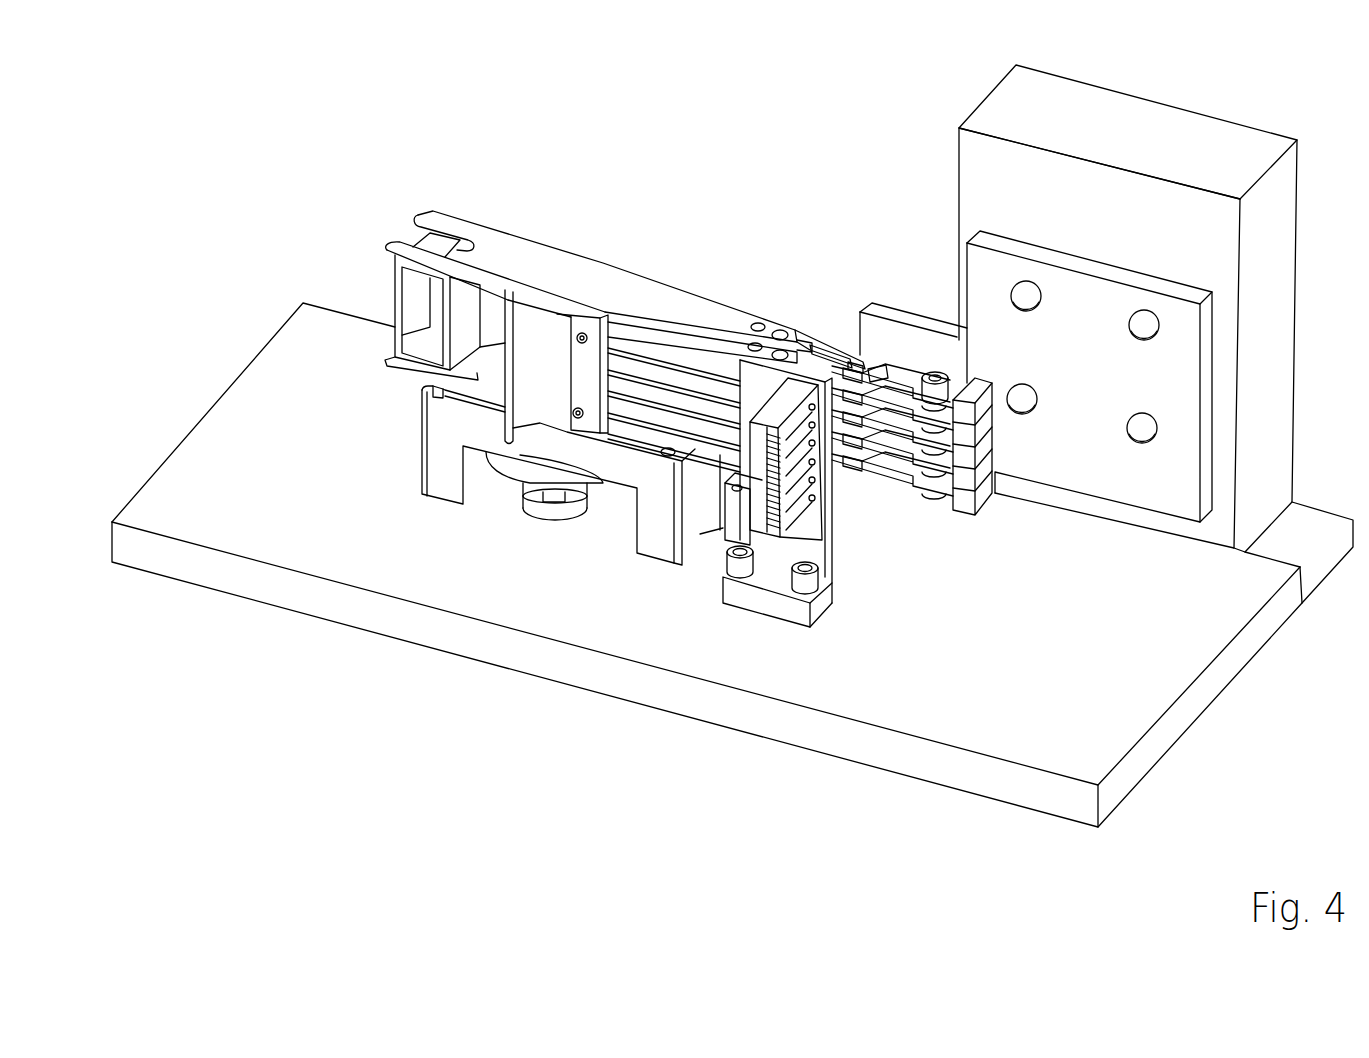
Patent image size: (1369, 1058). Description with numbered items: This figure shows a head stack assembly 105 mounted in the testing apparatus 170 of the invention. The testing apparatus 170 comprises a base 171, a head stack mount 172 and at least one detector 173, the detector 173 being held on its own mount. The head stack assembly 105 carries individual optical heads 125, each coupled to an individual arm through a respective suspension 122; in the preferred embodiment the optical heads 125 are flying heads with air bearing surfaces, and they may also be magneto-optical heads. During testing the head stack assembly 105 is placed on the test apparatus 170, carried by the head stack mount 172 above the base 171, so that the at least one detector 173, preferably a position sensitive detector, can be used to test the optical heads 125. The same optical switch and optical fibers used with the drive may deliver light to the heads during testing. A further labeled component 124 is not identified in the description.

The testing apparatus 170 is at (415, 84).
The base 171 is at (233, 440).
The head stack mount 172 is at (668, 538).
The head stack assembly 105 is at (613, 257).
The suspension 122 is at (823, 335).
The optical head 125 is at (864, 355).
The detector 173 is at (879, 363).
The head stack 124 is at (905, 497).